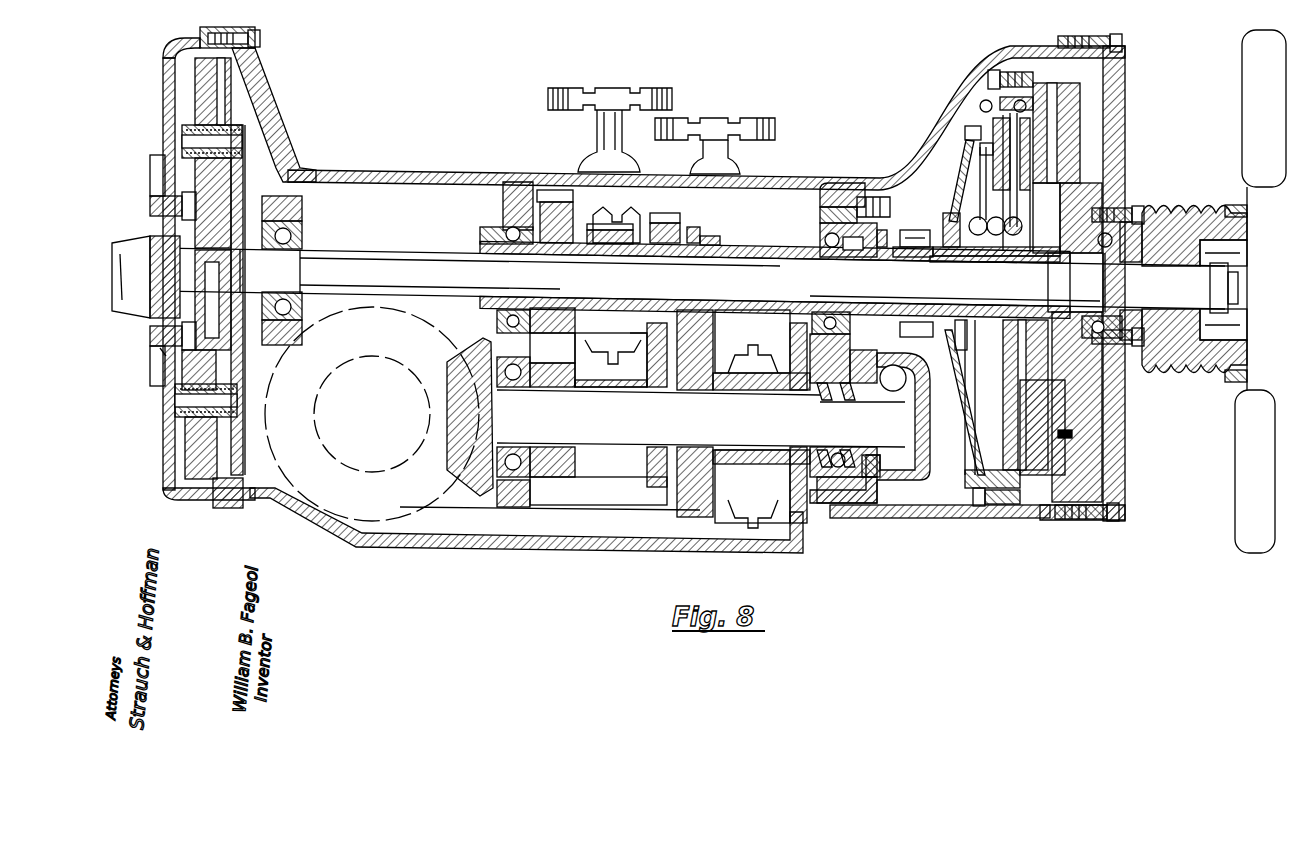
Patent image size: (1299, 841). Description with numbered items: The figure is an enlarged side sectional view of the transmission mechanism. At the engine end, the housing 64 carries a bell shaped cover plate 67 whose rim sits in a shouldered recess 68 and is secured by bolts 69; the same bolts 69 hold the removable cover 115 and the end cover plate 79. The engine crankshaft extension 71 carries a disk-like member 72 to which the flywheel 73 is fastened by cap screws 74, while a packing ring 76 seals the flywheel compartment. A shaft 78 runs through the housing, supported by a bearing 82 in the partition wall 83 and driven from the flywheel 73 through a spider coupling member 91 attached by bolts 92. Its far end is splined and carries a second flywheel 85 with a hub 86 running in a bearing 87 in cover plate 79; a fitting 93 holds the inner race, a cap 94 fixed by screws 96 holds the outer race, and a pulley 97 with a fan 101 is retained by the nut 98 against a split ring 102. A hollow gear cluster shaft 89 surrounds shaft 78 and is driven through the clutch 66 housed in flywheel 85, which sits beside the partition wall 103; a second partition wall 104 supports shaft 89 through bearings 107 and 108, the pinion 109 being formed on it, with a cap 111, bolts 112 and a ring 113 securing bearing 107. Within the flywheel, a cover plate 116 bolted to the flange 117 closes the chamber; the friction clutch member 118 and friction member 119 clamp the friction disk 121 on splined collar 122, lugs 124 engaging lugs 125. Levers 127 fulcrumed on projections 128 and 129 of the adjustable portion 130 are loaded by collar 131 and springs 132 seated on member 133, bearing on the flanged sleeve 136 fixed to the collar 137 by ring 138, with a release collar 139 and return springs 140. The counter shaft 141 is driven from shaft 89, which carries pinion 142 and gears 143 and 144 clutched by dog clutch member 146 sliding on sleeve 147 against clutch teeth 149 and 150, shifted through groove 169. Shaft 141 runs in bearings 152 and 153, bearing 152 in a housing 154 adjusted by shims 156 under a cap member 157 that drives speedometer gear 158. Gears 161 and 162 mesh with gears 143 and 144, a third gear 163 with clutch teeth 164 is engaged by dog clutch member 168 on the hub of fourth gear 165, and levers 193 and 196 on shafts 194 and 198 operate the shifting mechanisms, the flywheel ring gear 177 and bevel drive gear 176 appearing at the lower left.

The housing 64 is at (803, 178).
The clutch 66 is at (962, 150).
The bell shaped cover plate 67 is at (175, 502).
The shouldered recess 68 is at (220, 508).
The bolts 69 is at (262, 40).
The crank shaft extension 71 is at (138, 310).
The disk-like member 72 is at (152, 333).
The flywheel 73 is at (210, 86).
The cap screws 74 is at (152, 210).
The packing ring 76 is at (163, 352).
The shaft 78 is at (356, 256).
The end cover plate 79 is at (1110, 142).
The bearing 82 is at (298, 238).
The partition wall 83 is at (298, 204).
The second flywheel 85 is at (1080, 192).
The hub 86 is at (1105, 266).
The bearing 87 is at (1120, 272).
The hollow gear cluster shaft 89 is at (726, 250).
The coupling member 91 is at (236, 206).
The bolts 92 is at (233, 384).
The fitting 93 is at (496, 318).
The cap 94 is at (1168, 262).
The screws 96 is at (1122, 208).
The pulley 97 is at (1185, 378).
The nut 98 is at (1238, 297).
The fan 101 is at (1262, 168).
The split ring 102 is at (1070, 264).
The partition wall 103 is at (822, 198).
The second partition wall 104 is at (512, 196).
The bearing 107 is at (825, 240).
The bearing 108 is at (505, 228).
The pinion 109 is at (800, 262).
The cap 111 is at (876, 238).
The bolts 112 is at (886, 236).
The ring 113 is at (822, 224).
The removable cover 115 is at (572, 550).
The cover plate 116 is at (978, 478).
The axially extending flange 117 is at (1030, 522).
The friction clutch member 118 is at (1072, 436).
The friction member 119 is at (1065, 420).
The friction disk 121 is at (1000, 410).
The splined collar 122 is at (1005, 258).
The lugs 124 is at (1010, 506).
The lugs 125 is at (972, 519).
The levers 127 is at (1010, 162).
The projections 128 is at (980, 106).
The projections 129 is at (1060, 150).
The adjustable portion 130 is at (978, 158).
The axially movable collar 131 is at (1000, 207).
The springs 132 is at (960, 226).
The member 133 is at (955, 376).
The radially flanged sleeve 136 is at (998, 264).
The axially reciprocable collar 137 is at (915, 258).
The ring 138 is at (968, 320).
The release collar 139 is at (929, 340).
The springs 140 is at (995, 90).
The counter shaft 141 is at (640, 424).
The pinion 142 is at (695, 234).
The gear 143 is at (662, 214).
The gear 144 is at (560, 194).
The dog clutch member 146 is at (628, 218).
The splined sleeve 147 is at (620, 246).
The clutch teeth 149 is at (634, 338).
The clutch teeth 150 is at (611, 360).
The bearing 152 is at (850, 402).
The bearing 153 is at (512, 382).
The bearing housing 154 is at (882, 503).
The shims 156 is at (850, 505).
The cap member 157 is at (915, 472).
The speedometer drive gear 158 is at (888, 368).
The gear 161 is at (660, 390).
The gear 162 is at (560, 388).
The third gear 163 is at (700, 392).
The clutch teeth 164 is at (720, 372).
The fourth gear 165 is at (790, 517).
The dog clutch member 168 is at (762, 352).
The groove 169 is at (612, 226).
The bevel gear 176 is at (478, 488).
The flywheel gear 177 is at (378, 523).
The lever 193 is at (735, 125).
The upright shaft 194 is at (728, 150).
The lever 196 is at (570, 95).
The shaft 198 is at (610, 130).